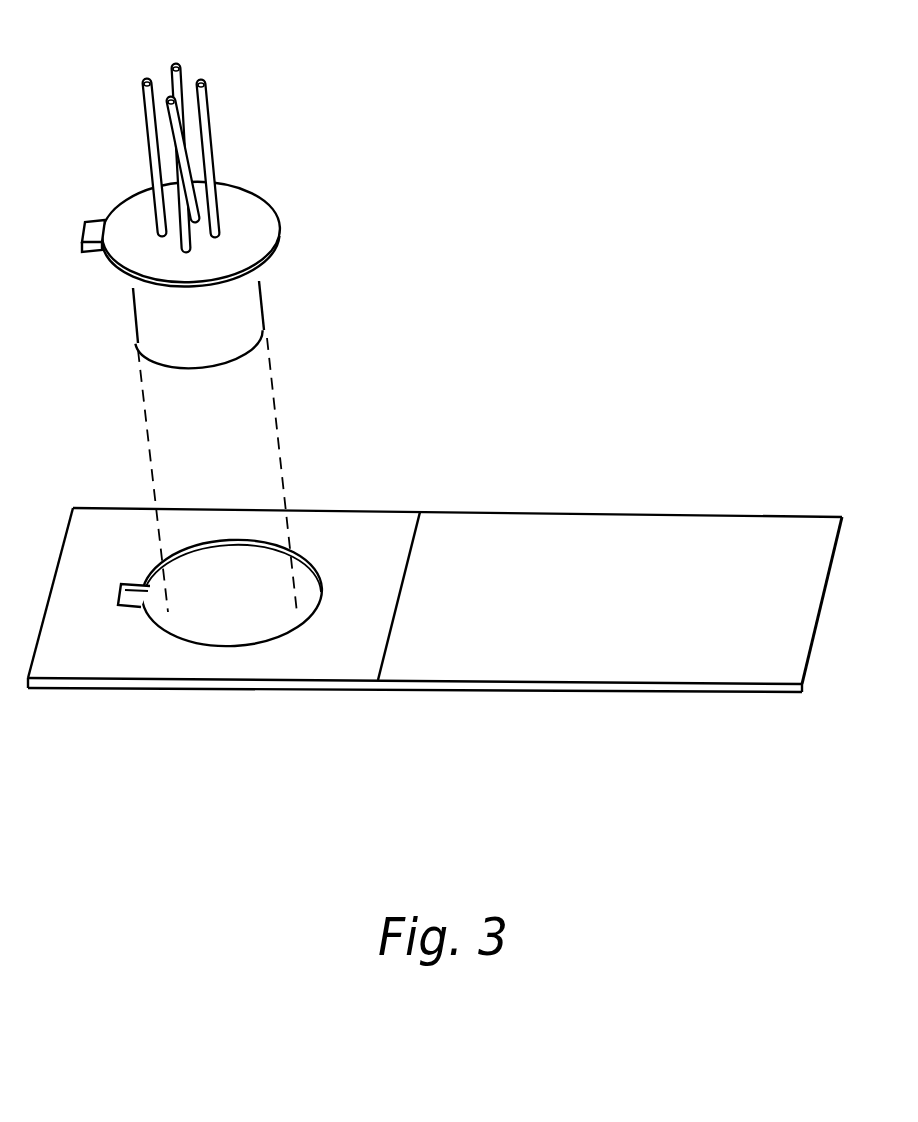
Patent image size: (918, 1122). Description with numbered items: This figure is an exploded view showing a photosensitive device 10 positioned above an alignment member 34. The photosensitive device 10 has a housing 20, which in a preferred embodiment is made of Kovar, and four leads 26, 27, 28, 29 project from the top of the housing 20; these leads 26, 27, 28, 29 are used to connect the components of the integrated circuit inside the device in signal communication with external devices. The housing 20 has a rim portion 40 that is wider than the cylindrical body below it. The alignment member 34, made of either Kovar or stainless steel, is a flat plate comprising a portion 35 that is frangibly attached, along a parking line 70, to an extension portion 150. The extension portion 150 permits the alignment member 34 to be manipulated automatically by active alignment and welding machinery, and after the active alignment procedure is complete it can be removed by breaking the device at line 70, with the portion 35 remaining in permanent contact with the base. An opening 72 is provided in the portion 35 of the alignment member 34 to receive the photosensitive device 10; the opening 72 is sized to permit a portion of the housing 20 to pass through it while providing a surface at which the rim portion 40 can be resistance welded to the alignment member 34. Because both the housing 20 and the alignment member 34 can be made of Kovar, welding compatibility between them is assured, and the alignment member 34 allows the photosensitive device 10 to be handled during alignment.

The photosensitive device 10 is at (233, 187).
The housing 20 is at (243, 295).
The lead 26 is at (148, 117).
The lead 27 is at (178, 72).
The lead 28 is at (173, 153).
The lead 29 is at (203, 100).
The alignment member 34 is at (628, 671).
The portion 35 is at (258, 668).
The rim portion 40 is at (265, 228).
The parking line 70 is at (415, 512).
The opening 72 is at (205, 635).
The extension portion 150 is at (437, 606).